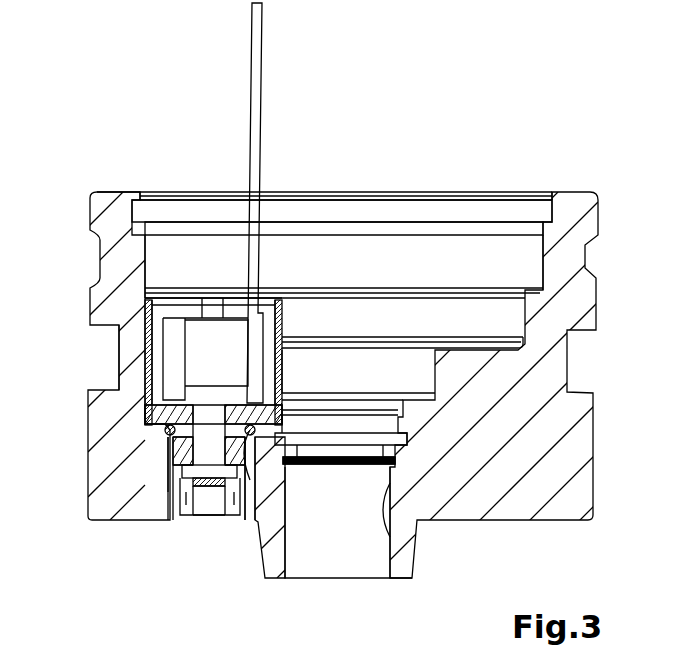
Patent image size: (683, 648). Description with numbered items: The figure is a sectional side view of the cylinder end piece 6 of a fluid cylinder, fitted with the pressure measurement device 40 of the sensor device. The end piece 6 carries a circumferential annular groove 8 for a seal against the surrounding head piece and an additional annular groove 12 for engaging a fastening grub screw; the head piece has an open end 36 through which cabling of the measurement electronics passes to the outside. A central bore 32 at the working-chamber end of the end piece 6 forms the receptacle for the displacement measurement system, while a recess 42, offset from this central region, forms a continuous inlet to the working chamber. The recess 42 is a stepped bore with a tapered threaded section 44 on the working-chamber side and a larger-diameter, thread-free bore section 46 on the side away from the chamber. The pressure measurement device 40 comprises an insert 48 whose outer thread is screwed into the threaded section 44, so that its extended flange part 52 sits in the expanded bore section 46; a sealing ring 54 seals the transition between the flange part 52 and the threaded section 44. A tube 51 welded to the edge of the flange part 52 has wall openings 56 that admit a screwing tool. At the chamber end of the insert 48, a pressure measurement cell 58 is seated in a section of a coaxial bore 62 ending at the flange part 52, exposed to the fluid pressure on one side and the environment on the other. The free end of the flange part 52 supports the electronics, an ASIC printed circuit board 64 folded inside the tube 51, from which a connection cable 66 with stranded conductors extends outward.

The cylinder end piece 6 is at (565, 440).
The circumferential annular groove 8 is at (117, 330).
The additional annular groove 12 is at (92, 240).
The central bore 32 is at (392, 543).
The open end 36 is at (120, 192).
The pressure measurement device 40 is at (188, 529).
The recess 42 is at (172, 520).
The tapered threaded section 44 is at (170, 462).
The thread-free bore section 46 is at (165, 424).
The insert 48 is at (276, 372).
The tube 51 is at (147, 363).
The flange part 52 is at (258, 413).
The sealing ring 54 is at (166, 432).
The wall openings 56 is at (147, 302).
The pressure measurement cell 58 is at (236, 505).
The coaxial bore 62 is at (240, 482).
The ASIC printed circuit board 64 is at (175, 362).
The connection cable 66 is at (248, 102).